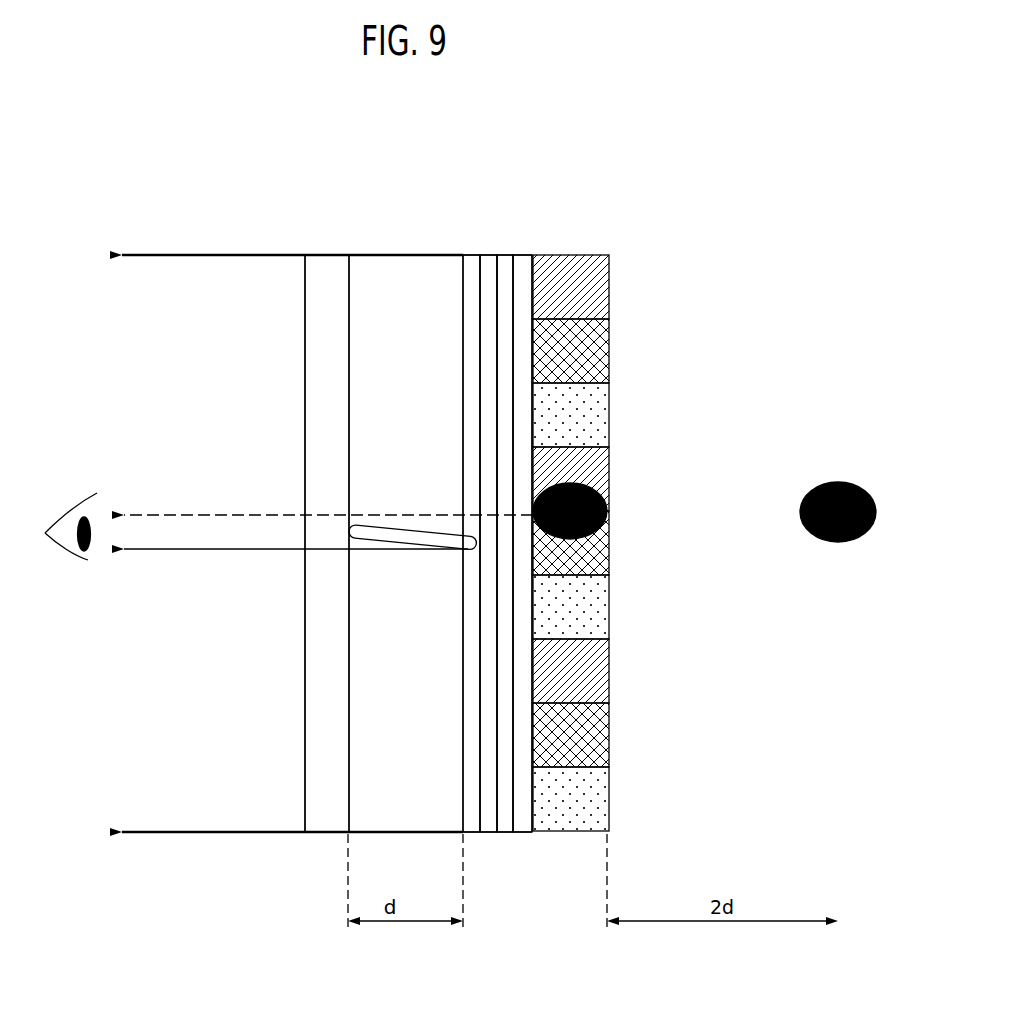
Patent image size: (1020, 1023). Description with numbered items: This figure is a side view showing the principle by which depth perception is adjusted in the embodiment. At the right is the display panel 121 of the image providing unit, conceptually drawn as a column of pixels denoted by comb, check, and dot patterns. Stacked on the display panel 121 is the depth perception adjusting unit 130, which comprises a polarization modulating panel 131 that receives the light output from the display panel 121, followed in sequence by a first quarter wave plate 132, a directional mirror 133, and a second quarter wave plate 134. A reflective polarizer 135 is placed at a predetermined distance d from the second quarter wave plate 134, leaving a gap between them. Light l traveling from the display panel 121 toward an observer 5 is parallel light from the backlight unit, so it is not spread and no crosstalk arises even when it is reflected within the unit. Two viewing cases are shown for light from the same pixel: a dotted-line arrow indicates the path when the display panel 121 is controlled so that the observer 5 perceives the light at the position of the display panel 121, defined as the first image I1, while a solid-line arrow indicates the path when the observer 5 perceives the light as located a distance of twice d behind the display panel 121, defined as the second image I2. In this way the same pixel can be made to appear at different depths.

The light l is at (236, 254).
The depth perception adjusting unit 130 is at (433, 550).
The reflective polarizer 135 is at (329, 830).
The second quarter wave plate 134 is at (470, 834).
The directional mirror 133 is at (487, 834).
The first quarter wave plate 132 is at (505, 834).
The polarization modulating panel 131 is at (522, 834).
The display panel 121 is at (576, 254).
The Image 1 I1 is at (607, 497).
The Image 2 I2 is at (836, 483).
The observer 5 is at (68, 559).